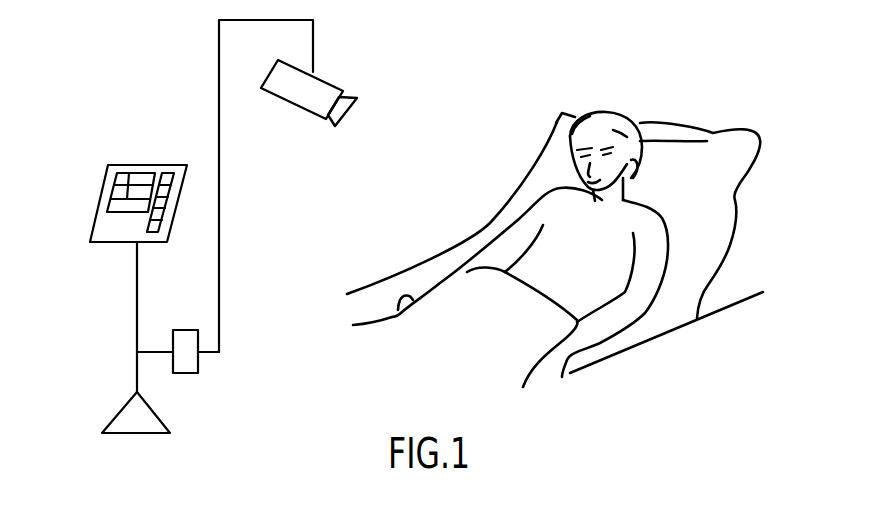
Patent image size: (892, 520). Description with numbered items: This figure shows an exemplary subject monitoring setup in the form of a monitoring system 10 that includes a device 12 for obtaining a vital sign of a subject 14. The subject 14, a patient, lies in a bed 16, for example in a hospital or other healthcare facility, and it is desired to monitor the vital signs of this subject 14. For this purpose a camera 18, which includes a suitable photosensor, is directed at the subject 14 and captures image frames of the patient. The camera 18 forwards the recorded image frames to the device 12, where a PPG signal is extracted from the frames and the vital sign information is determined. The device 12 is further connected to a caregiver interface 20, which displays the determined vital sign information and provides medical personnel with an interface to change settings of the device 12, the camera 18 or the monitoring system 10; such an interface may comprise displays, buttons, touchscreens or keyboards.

The monitoring system 10 is at (153, 111).
The device 12 is at (187, 373).
The subject 14 is at (647, 210).
The bed 16 is at (698, 290).
The camera 18 is at (327, 83).
The caregiver interface 20 is at (107, 185).